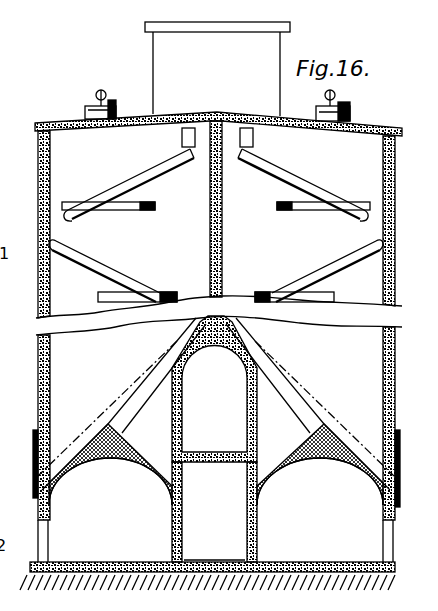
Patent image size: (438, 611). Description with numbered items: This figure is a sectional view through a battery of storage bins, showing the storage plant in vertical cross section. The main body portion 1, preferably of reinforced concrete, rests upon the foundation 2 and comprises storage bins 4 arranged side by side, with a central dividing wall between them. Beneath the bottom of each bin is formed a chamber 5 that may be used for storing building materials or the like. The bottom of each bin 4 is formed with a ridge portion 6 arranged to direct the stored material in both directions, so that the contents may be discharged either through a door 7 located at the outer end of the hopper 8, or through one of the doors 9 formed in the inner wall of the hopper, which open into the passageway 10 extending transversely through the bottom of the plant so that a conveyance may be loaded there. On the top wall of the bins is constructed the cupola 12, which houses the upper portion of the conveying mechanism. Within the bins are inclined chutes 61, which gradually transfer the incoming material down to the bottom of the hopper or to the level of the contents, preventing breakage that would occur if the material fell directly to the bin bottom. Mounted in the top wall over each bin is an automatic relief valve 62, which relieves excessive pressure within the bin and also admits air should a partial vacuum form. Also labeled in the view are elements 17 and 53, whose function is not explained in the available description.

The main body portion 1 is at (38, 174).
The foundation 2 is at (115, 562).
The storage bin 4 is at (67, 152).
The chamber 5 is at (216, 494).
The ridge portion 6 is at (108, 422).
The door 7 is at (393, 473).
The hopper 8 is at (87, 447).
The door 9 is at (240, 478).
The passageway 10 is at (214, 536).
The cupola 12 is at (217, 69).
The bar 17 is at (388, 485).
The block 53 is at (182, 138).
The inclined chute 61 is at (150, 170).
The automatic relief valve 62 is at (84, 100).